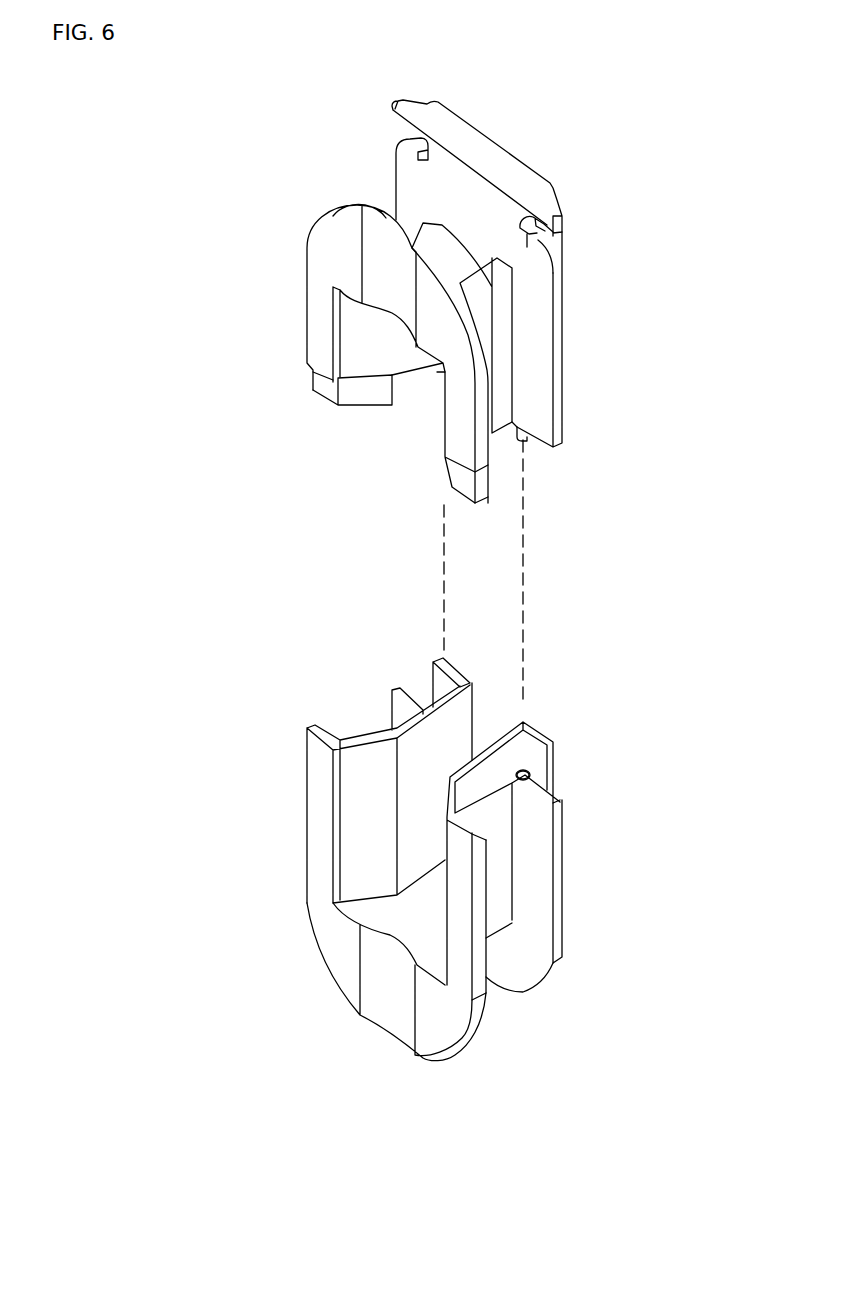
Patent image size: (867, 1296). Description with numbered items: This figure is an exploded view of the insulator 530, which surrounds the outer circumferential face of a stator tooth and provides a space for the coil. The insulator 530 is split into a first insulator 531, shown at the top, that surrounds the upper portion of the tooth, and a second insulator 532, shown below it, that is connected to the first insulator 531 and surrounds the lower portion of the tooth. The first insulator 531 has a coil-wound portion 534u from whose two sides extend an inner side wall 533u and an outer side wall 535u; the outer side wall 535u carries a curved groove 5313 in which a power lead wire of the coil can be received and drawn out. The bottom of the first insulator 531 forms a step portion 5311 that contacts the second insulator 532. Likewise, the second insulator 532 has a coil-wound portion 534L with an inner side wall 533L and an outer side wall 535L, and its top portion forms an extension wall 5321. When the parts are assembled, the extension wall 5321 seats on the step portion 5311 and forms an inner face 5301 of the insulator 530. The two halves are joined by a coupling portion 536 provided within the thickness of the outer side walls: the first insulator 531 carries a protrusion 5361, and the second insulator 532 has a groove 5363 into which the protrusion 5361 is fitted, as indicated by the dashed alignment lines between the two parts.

The insulator 530 is at (135, 159).
The first insulator 531 is at (603, 328).
The second insulator 532 is at (605, 865).
The inner side wall 533u is at (323, 273).
The step portion 5311 is at (357, 393).
The curved groove 5313 is at (540, 233).
The outer side wall 535u is at (533, 285).
The coil-wound portion 534u is at (500, 362).
The protrusion 5361 is at (543, 436).
The coupling portion 536 is at (683, 535).
The groove 5363 is at (525, 768).
The extension wall 5321 is at (543, 772).
The inner face 5301 is at (357, 810).
The outer side wall 535L is at (538, 915).
The coil-wound portion 534L is at (498, 903).
The inner side wall 533L is at (435, 1022).